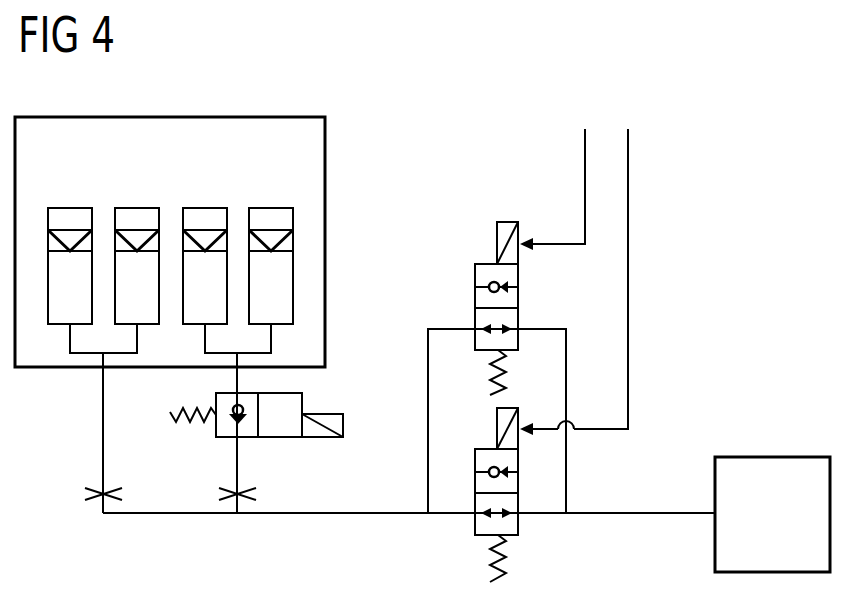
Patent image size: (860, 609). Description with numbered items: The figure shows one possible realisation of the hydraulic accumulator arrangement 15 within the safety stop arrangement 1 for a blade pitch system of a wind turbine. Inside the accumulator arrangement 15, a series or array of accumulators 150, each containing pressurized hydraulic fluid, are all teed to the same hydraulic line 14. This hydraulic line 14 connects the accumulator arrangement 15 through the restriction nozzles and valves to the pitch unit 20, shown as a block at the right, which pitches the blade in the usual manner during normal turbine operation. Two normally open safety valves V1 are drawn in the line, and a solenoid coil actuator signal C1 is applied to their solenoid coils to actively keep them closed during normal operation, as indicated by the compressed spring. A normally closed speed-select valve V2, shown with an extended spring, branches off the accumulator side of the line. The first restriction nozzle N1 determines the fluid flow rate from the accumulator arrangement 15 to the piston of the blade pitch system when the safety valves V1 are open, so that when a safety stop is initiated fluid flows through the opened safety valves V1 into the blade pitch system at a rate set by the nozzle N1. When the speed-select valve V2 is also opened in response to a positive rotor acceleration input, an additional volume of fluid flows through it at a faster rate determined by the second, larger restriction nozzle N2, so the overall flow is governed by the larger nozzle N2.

The safety stop arrangement 1 is at (770, 162).
The hydraulic line 14 is at (158, 516).
The hydraulic accumulator arrangement 15 is at (326, 205).
The accumulators 150 is at (68, 208).
The pitch unit 20 is at (772, 457).
The solenoid coil actuator signal C1 is at (585, 163).
The first restriction nozzle N1 is at (93, 503).
The second restriction nozzle N2 is at (230, 503).
The safety valve V1 is at (475, 272).
The speed-select valve V2 is at (283, 438).